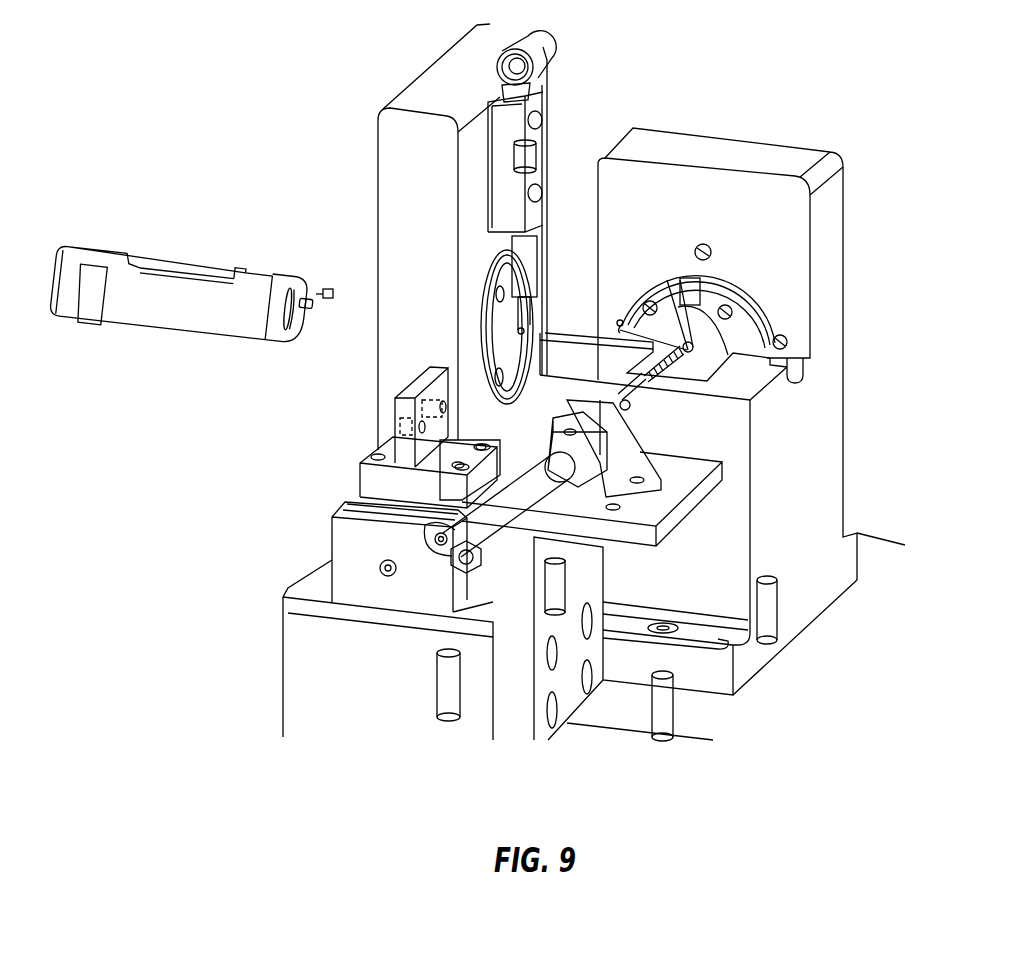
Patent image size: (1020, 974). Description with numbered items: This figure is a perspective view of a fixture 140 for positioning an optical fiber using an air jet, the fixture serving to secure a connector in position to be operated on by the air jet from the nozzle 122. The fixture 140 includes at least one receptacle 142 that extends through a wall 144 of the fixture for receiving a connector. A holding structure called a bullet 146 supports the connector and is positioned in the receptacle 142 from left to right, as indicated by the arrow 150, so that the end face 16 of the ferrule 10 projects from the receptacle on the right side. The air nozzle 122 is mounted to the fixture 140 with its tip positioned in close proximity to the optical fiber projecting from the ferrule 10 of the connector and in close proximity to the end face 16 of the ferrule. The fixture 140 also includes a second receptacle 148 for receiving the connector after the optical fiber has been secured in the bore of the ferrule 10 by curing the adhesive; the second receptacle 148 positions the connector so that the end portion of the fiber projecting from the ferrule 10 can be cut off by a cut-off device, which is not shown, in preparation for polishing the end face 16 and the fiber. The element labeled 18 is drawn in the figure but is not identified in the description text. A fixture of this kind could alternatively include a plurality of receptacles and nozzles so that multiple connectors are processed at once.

The ferrule 10 is at (181, 303).
The end face 16 is at (313, 290).
The tab 18 is at (262, 268).
The nozzle 122 is at (515, 262).
The fixture 140 is at (367, 392).
The receptacle 142 is at (492, 320).
The wall 144 is at (445, 97).
The bullet 146 is at (153, 305).
The second receptacle 148 is at (703, 290).
The arrow 150 is at (327, 290).